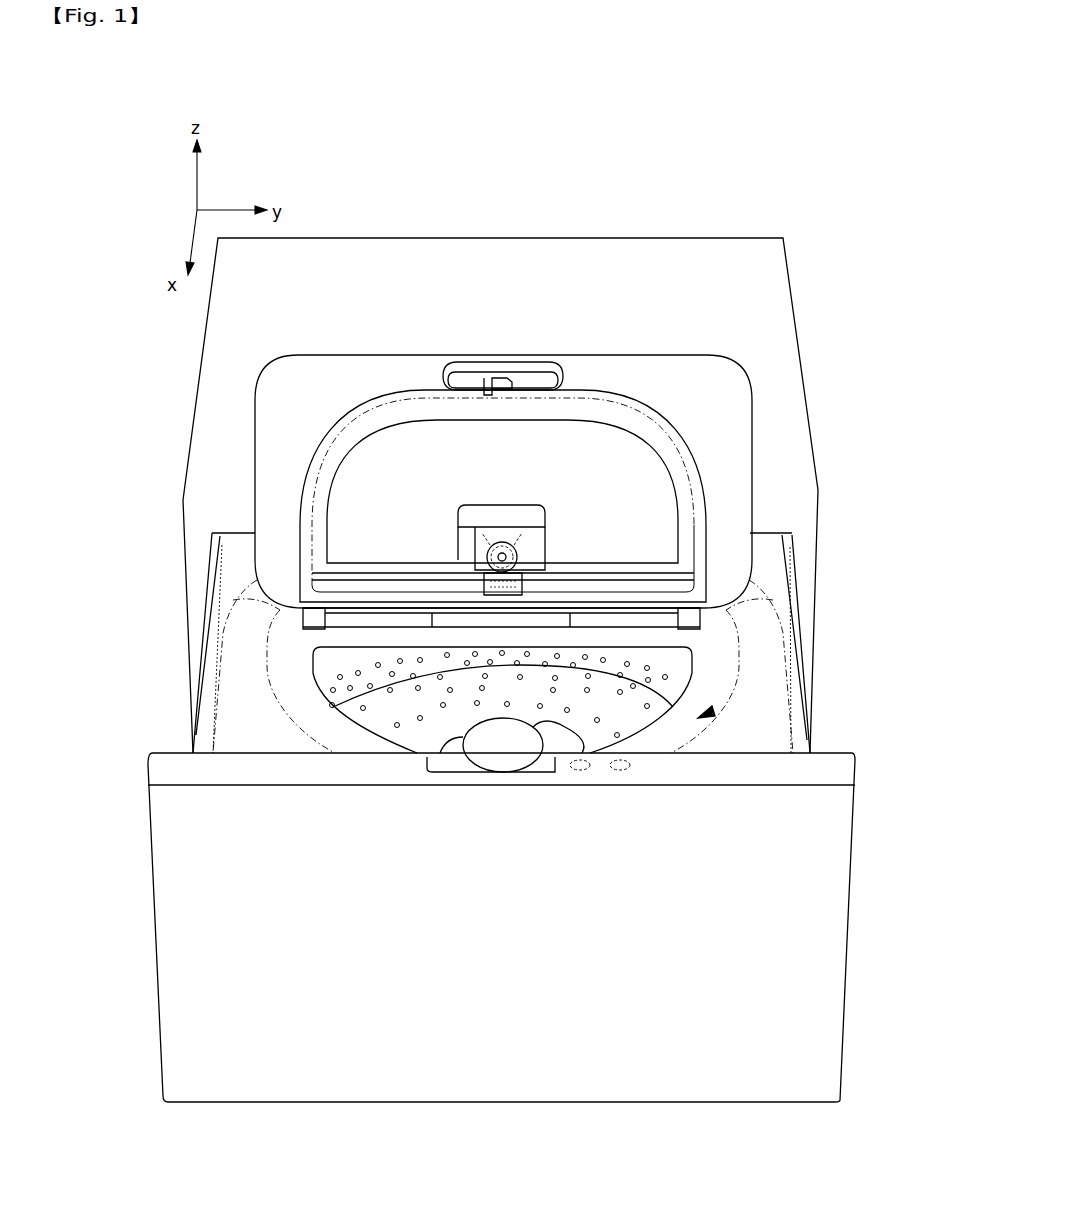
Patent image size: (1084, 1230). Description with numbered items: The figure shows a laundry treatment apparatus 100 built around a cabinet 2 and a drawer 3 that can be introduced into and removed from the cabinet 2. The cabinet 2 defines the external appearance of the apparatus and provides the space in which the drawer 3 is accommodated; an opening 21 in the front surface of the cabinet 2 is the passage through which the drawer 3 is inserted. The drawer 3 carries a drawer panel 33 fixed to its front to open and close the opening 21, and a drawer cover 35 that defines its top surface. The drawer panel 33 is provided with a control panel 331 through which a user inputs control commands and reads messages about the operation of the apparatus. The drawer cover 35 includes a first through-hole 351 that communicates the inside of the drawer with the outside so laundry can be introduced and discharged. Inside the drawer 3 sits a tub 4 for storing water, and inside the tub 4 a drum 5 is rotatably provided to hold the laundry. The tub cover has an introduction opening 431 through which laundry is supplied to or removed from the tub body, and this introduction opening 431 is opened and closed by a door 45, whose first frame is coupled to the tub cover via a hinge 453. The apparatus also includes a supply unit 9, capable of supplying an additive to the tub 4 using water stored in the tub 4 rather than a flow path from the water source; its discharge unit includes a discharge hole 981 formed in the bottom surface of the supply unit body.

The laundry treatment apparatus 100 is at (805, 150).
The cabinet 2 is at (790, 354).
The opening 21 is at (213, 542).
The drawer 3 is at (921, 737).
The drawer panel 33 is at (830, 856).
The drawer cover 35 is at (768, 741).
The control panel 331 is at (473, 777).
The first through-hole 351 is at (741, 621).
The tub 4 is at (706, 712).
The introduction opening 431 is at (313, 668).
The door 45 is at (357, 367).
The hinge 453 is at (302, 619).
The drum 5 is at (630, 703).
The supply unit 9 is at (457, 540).
The discharge hole 981 is at (502, 553).